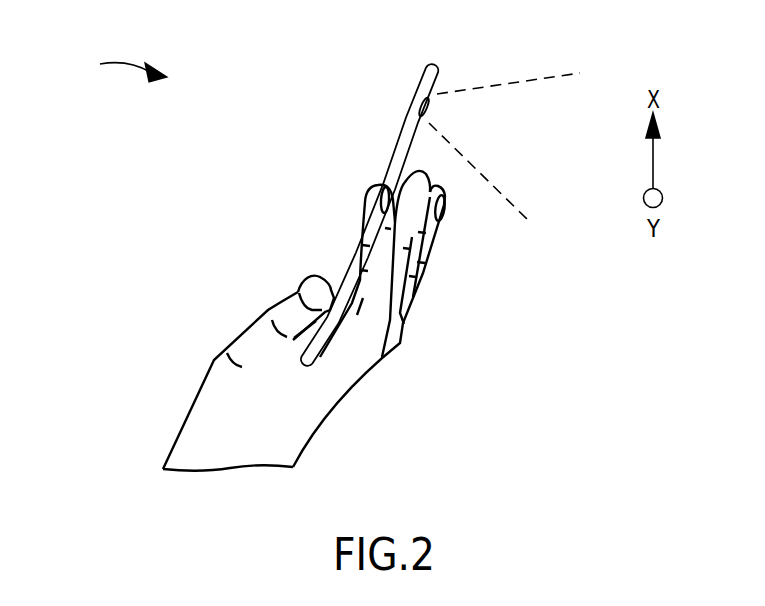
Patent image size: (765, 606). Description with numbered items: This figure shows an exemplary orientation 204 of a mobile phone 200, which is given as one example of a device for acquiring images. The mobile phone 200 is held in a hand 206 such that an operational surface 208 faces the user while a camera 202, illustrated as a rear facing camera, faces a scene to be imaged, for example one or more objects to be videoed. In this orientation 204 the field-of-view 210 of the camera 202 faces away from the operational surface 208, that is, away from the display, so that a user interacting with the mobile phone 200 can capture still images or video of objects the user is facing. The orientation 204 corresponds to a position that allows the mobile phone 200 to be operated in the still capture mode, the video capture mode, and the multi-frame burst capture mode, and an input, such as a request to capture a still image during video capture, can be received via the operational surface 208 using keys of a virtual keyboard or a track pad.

The mobile phone 200 is at (433, 63).
The camera 202 is at (427, 120).
The orientation 204 is at (114, 70).
The hand 206 is at (288, 452).
The operational surface 208 is at (388, 165).
The field-of-view 210 is at (540, 154).